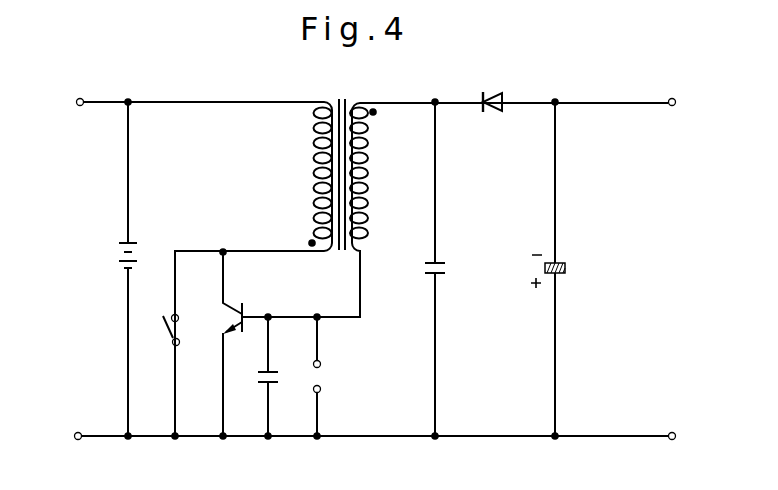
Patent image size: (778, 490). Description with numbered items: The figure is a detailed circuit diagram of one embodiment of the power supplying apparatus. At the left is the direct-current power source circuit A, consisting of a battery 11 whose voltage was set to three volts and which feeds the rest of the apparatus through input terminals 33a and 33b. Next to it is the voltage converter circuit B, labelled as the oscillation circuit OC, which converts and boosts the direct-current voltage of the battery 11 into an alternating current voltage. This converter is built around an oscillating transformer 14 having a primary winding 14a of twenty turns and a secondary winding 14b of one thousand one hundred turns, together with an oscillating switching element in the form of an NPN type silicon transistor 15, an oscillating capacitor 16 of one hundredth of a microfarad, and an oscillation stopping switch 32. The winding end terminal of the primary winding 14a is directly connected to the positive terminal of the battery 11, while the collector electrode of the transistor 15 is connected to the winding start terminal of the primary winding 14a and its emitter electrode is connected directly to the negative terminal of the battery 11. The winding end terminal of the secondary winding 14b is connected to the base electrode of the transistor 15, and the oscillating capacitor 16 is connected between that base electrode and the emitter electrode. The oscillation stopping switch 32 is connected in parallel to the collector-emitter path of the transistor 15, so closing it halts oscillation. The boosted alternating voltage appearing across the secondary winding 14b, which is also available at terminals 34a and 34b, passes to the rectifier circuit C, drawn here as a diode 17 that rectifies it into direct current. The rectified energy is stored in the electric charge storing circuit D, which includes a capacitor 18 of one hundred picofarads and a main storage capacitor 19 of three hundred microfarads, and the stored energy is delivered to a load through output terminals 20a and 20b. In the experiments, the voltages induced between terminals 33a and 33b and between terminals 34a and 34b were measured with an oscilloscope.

The battery 11 is at (121, 243).
The oscillating transformer 14 is at (340, 97).
The primary winding 14a is at (315, 205).
The secondary winding 14b is at (395, 212).
The NPN type silicon transistor 15 is at (220, 313).
The oscillating capacitor 16 is at (263, 382).
The diode 17 is at (483, 92).
The capacitor 18 is at (437, 265).
The main storage capacitor 19 is at (565, 275).
The output terminal 20a is at (672, 98).
The output terminal 20b is at (672, 440).
The oscillation stopping switch 32 is at (167, 327).
The terminal 33a is at (86, 85).
The terminal 33b is at (78, 440).
The terminal 34a is at (320, 365).
The terminal 34b is at (320, 389).
The direct-current power source circuit A is at (116, 265).
The voltage converter circuit B is at (243, 97).
The rectifier circuit C is at (510, 92).
The electric charge storing circuit D is at (567, 130).
The oscillation circuit OC is at (283, 143).